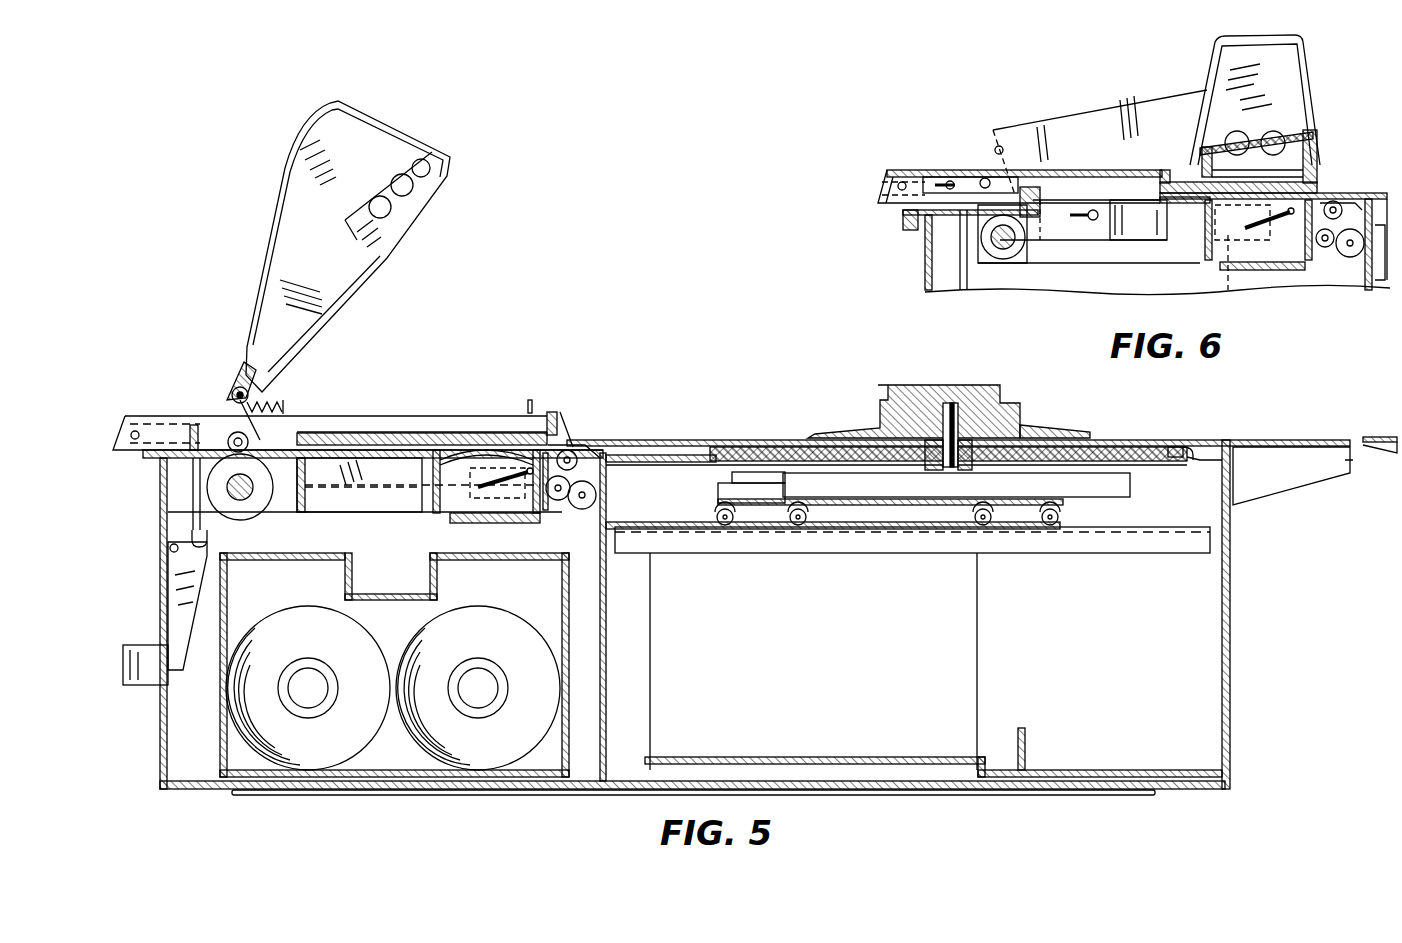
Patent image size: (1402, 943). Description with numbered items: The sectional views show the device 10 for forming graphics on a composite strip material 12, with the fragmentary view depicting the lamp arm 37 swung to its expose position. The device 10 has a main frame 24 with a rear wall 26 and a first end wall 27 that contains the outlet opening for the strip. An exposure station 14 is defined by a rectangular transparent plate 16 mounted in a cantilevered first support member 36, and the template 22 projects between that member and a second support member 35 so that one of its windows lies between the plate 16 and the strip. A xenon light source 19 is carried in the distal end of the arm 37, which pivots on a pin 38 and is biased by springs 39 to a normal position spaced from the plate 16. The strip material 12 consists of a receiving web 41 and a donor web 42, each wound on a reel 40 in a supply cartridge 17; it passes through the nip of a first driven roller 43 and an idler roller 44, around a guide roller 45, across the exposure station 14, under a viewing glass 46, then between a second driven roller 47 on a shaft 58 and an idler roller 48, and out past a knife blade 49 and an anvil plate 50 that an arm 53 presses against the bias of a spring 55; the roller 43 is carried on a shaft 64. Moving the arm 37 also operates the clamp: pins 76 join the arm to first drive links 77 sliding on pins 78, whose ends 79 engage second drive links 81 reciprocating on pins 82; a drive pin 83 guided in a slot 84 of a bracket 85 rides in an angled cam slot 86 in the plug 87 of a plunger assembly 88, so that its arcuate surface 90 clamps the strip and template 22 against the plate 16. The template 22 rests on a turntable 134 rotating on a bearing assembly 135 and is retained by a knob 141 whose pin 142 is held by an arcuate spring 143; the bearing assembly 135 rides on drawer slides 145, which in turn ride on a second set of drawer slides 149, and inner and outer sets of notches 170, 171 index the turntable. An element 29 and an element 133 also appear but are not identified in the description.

In FIG. 5, the device for forming graphics 10 is at (455, 335).
In FIG. 6, the device for forming graphics 10 is at (1175, 92).
In FIG. 5, the composite strip material 12 is at (122, 455).
In FIG. 6, the composite strip material 12 is at (880, 205).
In FIG. 5, the exposure station 14 is at (486, 432).
In FIG. 6, the exposure station 14 is at (1256, 182).
In FIG. 5, the transparent plate 16 is at (458, 435).
In FIG. 6, the transparent plate 16 is at (1285, 182).
In FIG. 5, the supply cartridge 17 is at (220, 725).
In FIG. 5, the light source 19 is at (408, 222).
In FIG. 6, the light source 19 is at (1320, 150).
In FIG. 5, the template 22 is at (1325, 440).
In FIG. 6, the template 22 is at (1372, 193).
In FIG. 5, the main frame 24 is at (1232, 682).
In FIG. 5, the rear wall 26 is at (1128, 679).
In FIG. 5, the first end wall 27 is at (160, 742).
In FIG. 5, the bracket 29 is at (550, 412).
In FIG. 5, the second support member 35 is at (400, 513).
In FIG. 5, the first support member 36 is at (425, 432).
In FIG. 6, the first support member 36 is at (1085, 170).
In FIG. 5, the arm 37 is at (295, 257).
In FIG. 6, the arm 37 is at (1125, 100).
In FIG. 5, the pin 38 is at (235, 388).
In FIG. 6, the pin 38 is at (1000, 145).
In FIG. 5, the springs 39 is at (243, 385).
In FIG. 5, the reel 40 is at (425, 640).
In FIG. 5, the receiving web 41 is at (390, 776).
In FIG. 5, the donor web 42 is at (562, 595).
In FIG. 5, the first driven roller 43 is at (556, 501).
In FIG. 6, the first driven roller 43 is at (1327, 248).
In FIG. 5, the idler roller 44 is at (597, 495).
In FIG. 6, the idler roller 44 is at (1355, 257).
In FIG. 5, the guide roller 45 is at (572, 452).
In FIG. 6, the guide roller 45 is at (1338, 201).
In FIG. 5, the glass 46 is at (385, 433).
In FIG. 6, the glass 46 is at (1175, 182).
In FIG. 5, the second driven roller 47 is at (265, 505).
In FIG. 6, the second driven roller 47 is at (1012, 258).
In FIG. 5, the idler roller 48 is at (232, 432).
In FIG. 5, the knife blade 49 is at (192, 425).
In FIG. 5, the anvil plate 50 is at (193, 512).
In FIG. 6, the anvil plate 50 is at (960, 270).
In FIG. 5, the arm 53 is at (175, 600).
In FIG. 5, the spring 55 is at (190, 540).
In FIG. 5, the rotatable shaft 58 is at (240, 500).
In FIG. 6, the rotatable shaft 58 is at (1003, 250).
In FIG. 5, the shaft 64 is at (586, 462).
In FIG. 6, the shaft 64 is at (1322, 250).
In FIG. 6, the pin 76 is at (984, 177).
In FIG. 6, the first drive link 77 is at (965, 178).
In FIG. 6, the pin 78 is at (945, 178).
In FIG. 6, the end 79 is at (1035, 215).
In FIG. 6, the second drive link 81 is at (1147, 226).
In FIG. 6, the pin 82 is at (1095, 222).
In FIG. 5, the drive pin 83 is at (520, 523).
In FIG. 6, the drive pin 83 is at (1258, 214).
In FIG. 5, the slot 84 is at (517, 397).
In FIG. 6, the slot 84 is at (1225, 262).
In FIG. 5, the bracket 85 is at (480, 556).
In FIG. 6, the bracket 85 is at (1300, 272).
In FIG. 5, the cam slot 86 is at (520, 492).
In FIG. 6, the cam slot 86 is at (1286, 216).
In FIG. 5, the plug 87 is at (440, 493).
In FIG. 6, the plug 87 is at (1205, 245).
In FIG. 5, the plunger assembly 88 is at (457, 503).
In FIG. 6, the plunger assembly 88 is at (1226, 248).
In FIG. 5, the arcuate surface 90 is at (500, 450).
In FIG. 5, the wedge 133 is at (1065, 432).
In FIG. 5, the turntable 134 is at (1135, 442).
In FIG. 5, the bearing assembly 135 is at (942, 480).
In FIG. 5, the removable knob 141 is at (920, 388).
In FIG. 5, the axially projecting pin 142 is at (956, 405).
In FIG. 5, the arcuate spring 143 is at (966, 440).
In FIG. 5, the first pair of drawer slides 145 is at (883, 498).
In FIG. 5, the second set of drawer slides 149 is at (1060, 517).
In FIG. 5, the inner set of notches 170 is at (1195, 452).
In FIG. 5, the outer set of notches 171 is at (1170, 447).